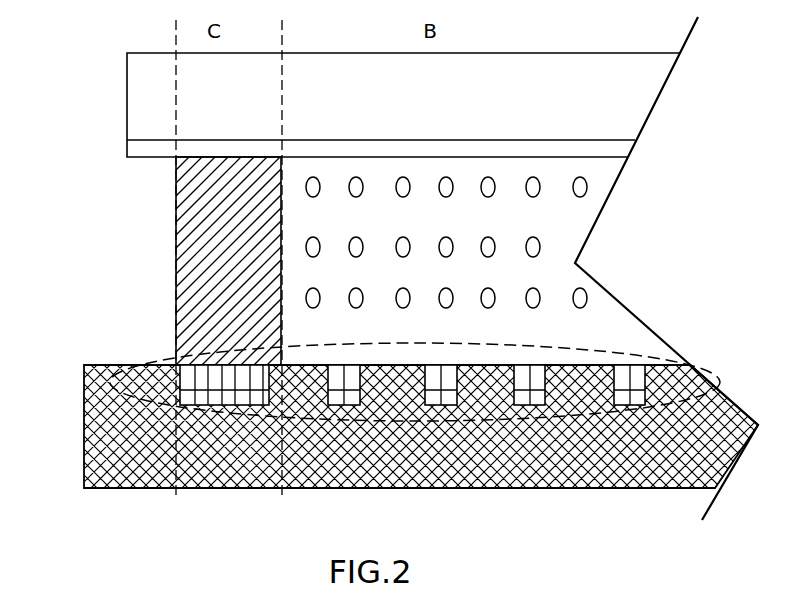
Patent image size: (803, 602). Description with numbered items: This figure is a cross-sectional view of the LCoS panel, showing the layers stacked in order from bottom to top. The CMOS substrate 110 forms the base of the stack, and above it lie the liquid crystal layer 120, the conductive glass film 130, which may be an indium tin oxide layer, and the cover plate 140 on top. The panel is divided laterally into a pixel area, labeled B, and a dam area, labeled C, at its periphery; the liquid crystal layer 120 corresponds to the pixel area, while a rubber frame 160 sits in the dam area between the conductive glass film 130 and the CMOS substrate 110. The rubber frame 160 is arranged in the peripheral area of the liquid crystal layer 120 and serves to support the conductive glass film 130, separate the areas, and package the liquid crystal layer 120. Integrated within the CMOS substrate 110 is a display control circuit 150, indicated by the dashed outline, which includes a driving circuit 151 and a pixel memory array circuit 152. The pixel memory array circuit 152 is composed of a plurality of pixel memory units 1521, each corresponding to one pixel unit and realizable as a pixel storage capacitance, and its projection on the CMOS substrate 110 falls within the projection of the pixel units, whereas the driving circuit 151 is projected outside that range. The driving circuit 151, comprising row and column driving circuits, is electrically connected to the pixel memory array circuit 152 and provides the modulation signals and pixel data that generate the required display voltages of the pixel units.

The CMOS substrate 110 is at (96, 422).
The liquid crystal layer 120 is at (592, 198).
The conductive glass film 130 is at (138, 153).
The cover plate 140 is at (140, 103).
The display control circuit 150 is at (708, 373).
The driving circuit 151 is at (229, 411).
The pixel memory array circuit 152 is at (432, 413).
The rubber frame 160 is at (197, 292).
The pixel memory unit 1521 is at (535, 383).